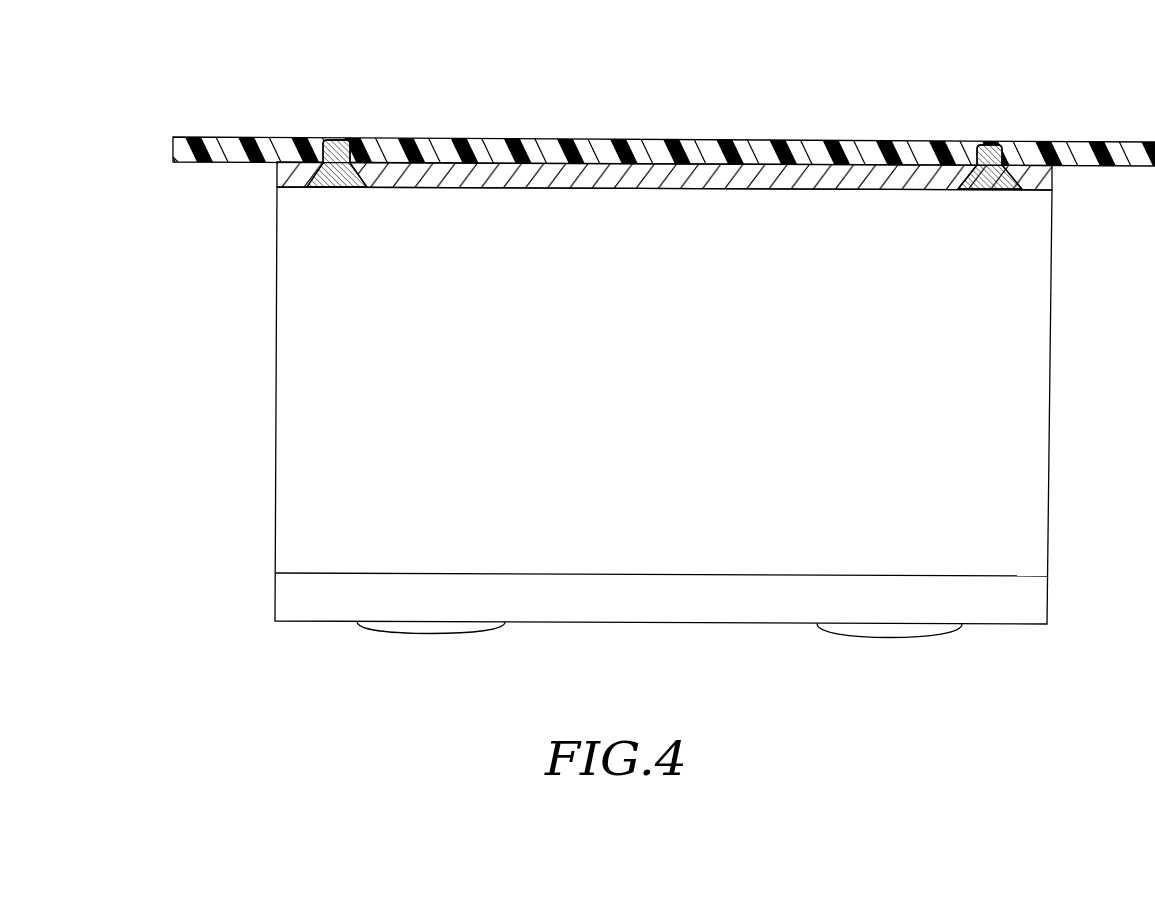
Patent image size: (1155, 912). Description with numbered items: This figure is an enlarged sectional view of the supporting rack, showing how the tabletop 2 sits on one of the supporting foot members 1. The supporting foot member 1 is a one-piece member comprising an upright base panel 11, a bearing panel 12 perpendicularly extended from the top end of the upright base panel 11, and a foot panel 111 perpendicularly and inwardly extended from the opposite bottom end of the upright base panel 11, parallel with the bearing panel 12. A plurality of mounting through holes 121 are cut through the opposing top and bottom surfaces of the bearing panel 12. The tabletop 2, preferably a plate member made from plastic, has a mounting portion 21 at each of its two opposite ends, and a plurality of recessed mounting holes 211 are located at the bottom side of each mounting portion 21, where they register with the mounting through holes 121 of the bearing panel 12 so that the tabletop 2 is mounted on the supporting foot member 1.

The supporting foot member 1 is at (615, 389).
The upright base panel 11 is at (302, 343).
The foot panel 111 is at (308, 605).
The bearing panel 12 is at (617, 207).
The mounting through hole 121 is at (365, 184).
The tabletop 2 is at (1116, 150).
The mounting portion 21 is at (994, 95).
The recessed mounting hole 211 is at (1000, 145).